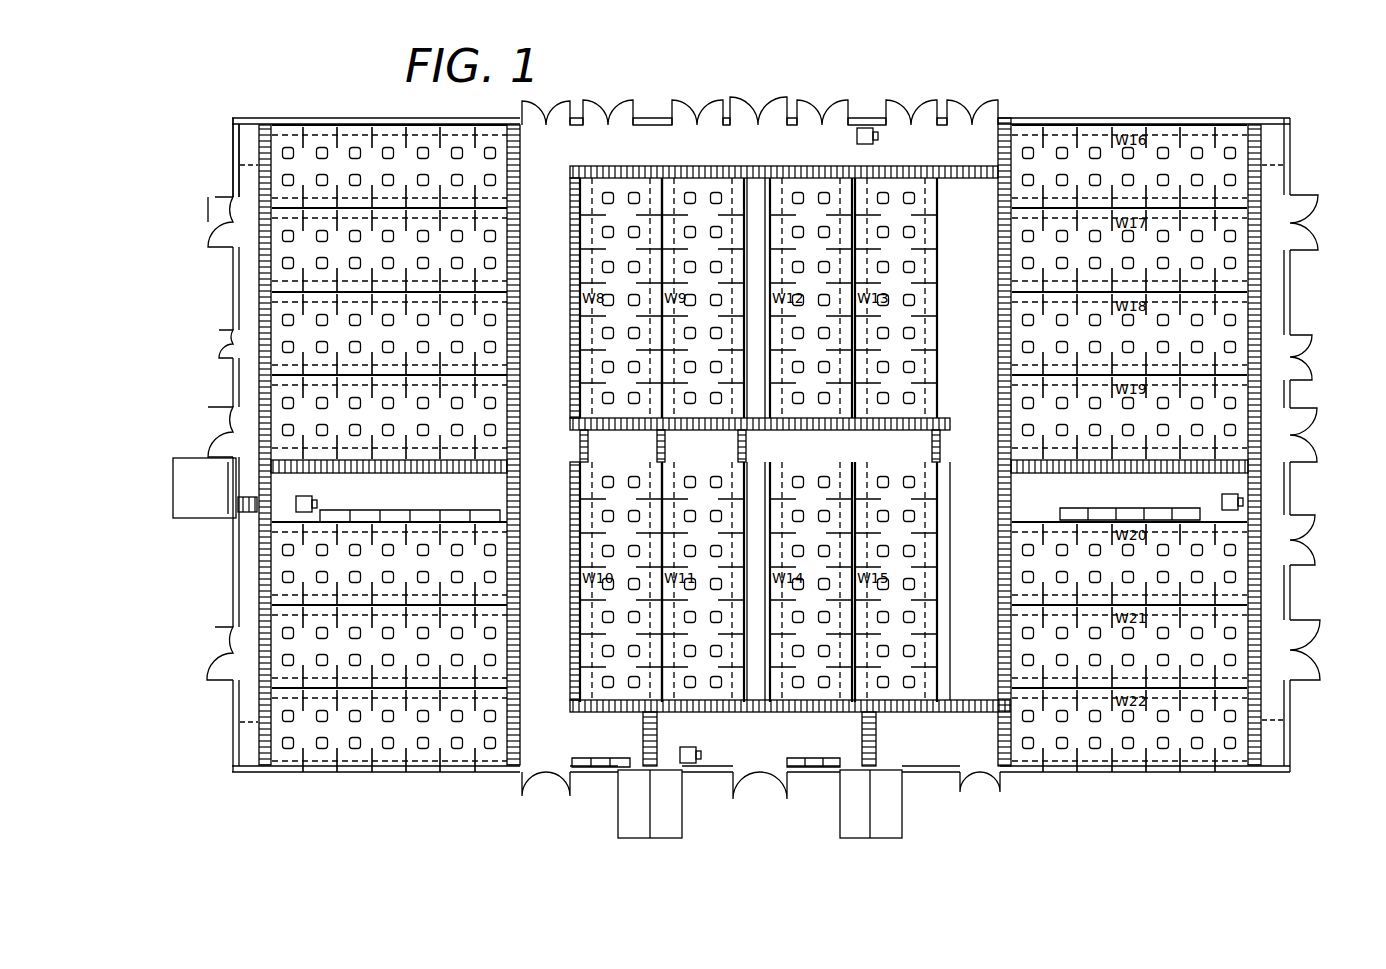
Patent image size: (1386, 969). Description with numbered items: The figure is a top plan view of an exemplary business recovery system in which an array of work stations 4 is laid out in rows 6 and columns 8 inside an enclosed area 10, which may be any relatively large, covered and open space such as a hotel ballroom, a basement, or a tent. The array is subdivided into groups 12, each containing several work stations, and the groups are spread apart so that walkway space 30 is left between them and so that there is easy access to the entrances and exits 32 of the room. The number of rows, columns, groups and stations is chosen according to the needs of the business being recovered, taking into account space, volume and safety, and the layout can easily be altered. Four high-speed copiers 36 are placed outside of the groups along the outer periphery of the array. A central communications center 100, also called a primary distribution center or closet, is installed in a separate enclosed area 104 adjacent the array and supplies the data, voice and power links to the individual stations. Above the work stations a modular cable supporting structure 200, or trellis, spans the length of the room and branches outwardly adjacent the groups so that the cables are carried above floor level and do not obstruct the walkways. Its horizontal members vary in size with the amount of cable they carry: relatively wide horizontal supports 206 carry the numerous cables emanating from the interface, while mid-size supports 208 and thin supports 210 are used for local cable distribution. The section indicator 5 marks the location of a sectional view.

The enclosed area 10 is at (732, 92).
The work stations 4 is at (376, 126).
The section line 5 is at (248, 622).
The rows 6 is at (224, 142).
The columns 8 is at (290, 108).
The groups 12 is at (272, 243).
The walkway space 30 is at (628, 162).
The entrances and exits 32 is at (745, 780).
The high-speed copiers 36 is at (308, 498).
The central communications center 100 is at (202, 498).
The separate enclosed area 104 is at (176, 460).
The modular cable supporting structure 200 is at (1262, 165).
The wide horizontal supports 206 is at (252, 448).
The mid-size supports 208 is at (950, 170).
The thin supports 210 is at (946, 442).